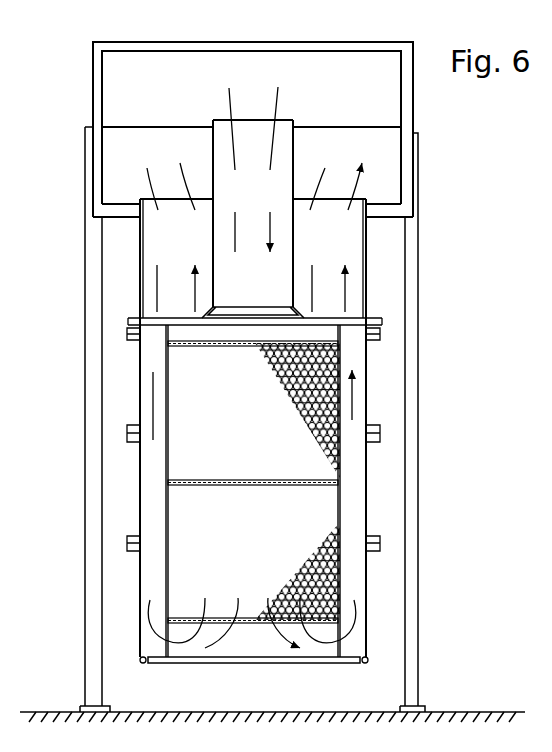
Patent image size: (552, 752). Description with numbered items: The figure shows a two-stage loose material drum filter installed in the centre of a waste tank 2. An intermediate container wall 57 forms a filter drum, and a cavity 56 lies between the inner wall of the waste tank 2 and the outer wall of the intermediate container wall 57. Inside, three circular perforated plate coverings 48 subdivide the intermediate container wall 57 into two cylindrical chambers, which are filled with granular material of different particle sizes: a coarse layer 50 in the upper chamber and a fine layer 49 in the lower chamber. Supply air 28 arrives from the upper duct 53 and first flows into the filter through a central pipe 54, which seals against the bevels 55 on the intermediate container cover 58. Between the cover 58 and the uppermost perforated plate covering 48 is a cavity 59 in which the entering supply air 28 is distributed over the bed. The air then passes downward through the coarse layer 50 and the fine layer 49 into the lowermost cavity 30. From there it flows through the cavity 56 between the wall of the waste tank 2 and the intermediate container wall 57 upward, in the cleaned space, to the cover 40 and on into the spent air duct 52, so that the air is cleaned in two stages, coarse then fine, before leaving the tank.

The waste tank 2 is at (140, 432).
The supply air 28 is at (272, 232).
The lowermost cavity 30 is at (258, 643).
The cover 40 is at (366, 255).
The perforated plate coverings 48 is at (262, 346).
The fine layer 49 is at (340, 585).
The coarse layer 50 is at (340, 410).
The spent air duct 52 is at (393, 169).
The upper duct 53 is at (393, 85).
The central pipe 54 is at (212, 140).
The bevels 55 is at (208, 318).
The cavity 56 is at (148, 571).
The intermediate container wall 57 is at (168, 497).
The intermediate container cover 58 is at (178, 325).
The cavity 59 is at (317, 332).